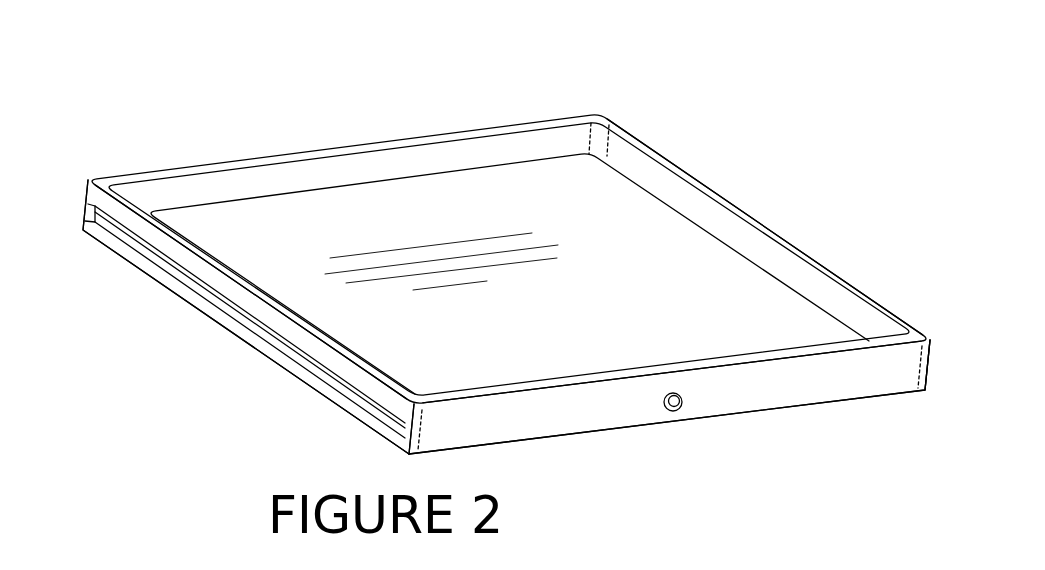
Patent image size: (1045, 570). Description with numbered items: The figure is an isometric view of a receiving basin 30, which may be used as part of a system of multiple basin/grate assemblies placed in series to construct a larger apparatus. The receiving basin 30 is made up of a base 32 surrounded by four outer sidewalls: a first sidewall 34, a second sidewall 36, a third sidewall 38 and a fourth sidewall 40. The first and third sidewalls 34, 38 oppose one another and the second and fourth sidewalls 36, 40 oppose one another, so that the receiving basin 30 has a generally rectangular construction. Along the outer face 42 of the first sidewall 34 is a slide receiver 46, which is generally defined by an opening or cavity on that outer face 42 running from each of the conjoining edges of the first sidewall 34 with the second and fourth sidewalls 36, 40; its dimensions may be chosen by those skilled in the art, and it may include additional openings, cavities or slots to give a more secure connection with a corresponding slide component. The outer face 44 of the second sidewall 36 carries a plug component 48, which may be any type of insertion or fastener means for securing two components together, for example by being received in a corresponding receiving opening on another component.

The receiving basin 30 is at (145, 113).
The base 32 is at (570, 213).
The first sidewall 34 is at (203, 348).
The second sidewall 36 is at (820, 430).
The third sidewall 38 is at (762, 177).
The fourth sidewall 40 is at (343, 143).
The outer face 42 is at (170, 275).
The outer face 44 is at (758, 392).
The slide receiver 46 is at (343, 382).
The plug component 48 is at (666, 409).